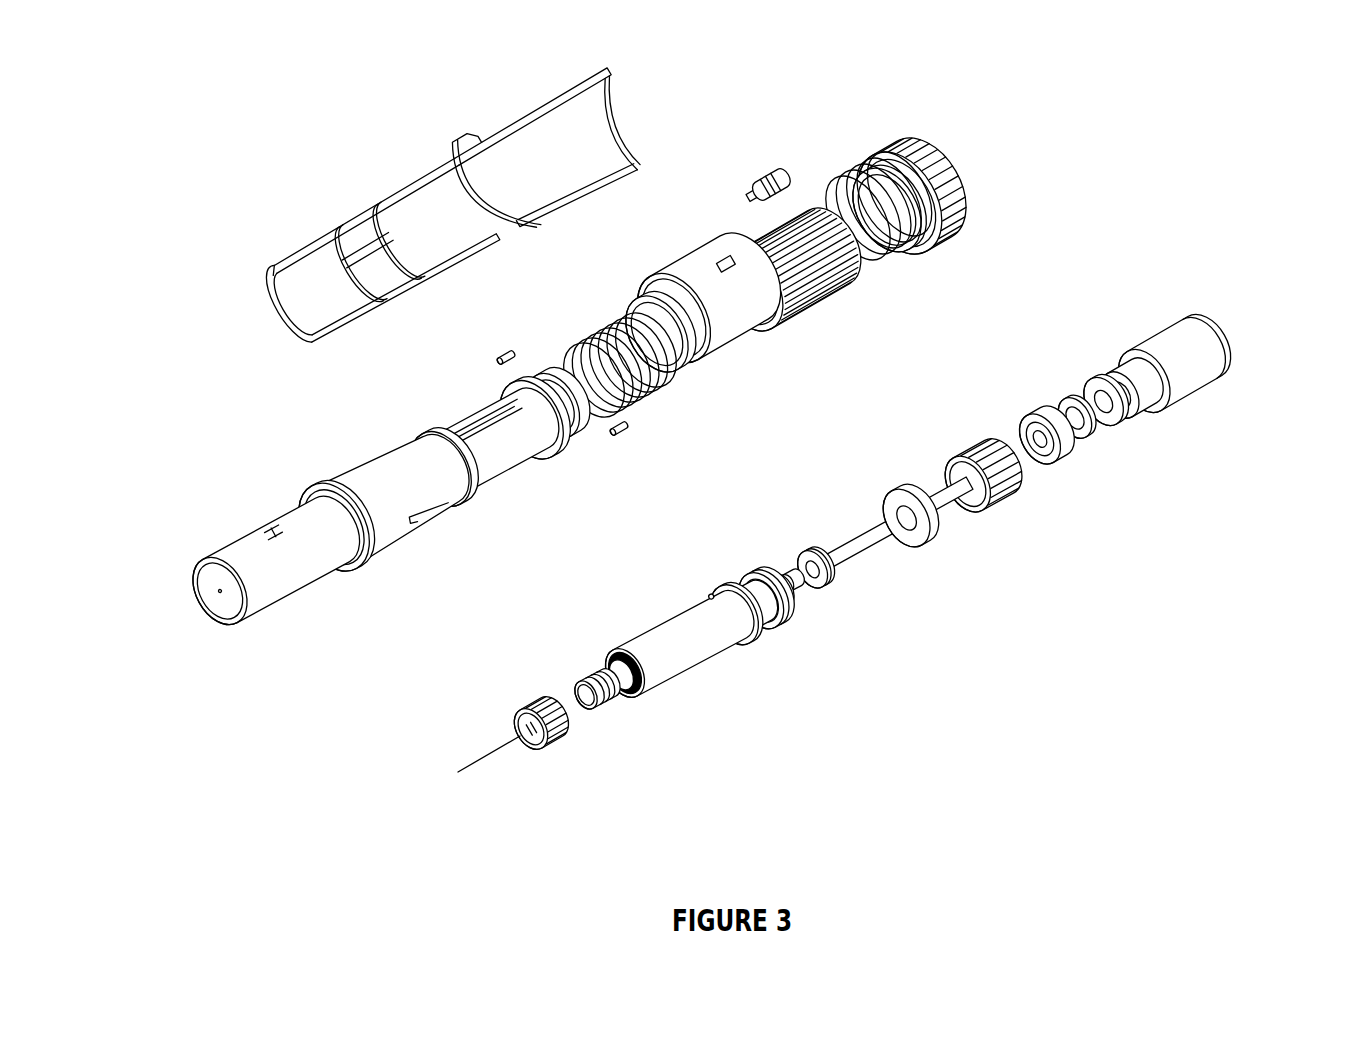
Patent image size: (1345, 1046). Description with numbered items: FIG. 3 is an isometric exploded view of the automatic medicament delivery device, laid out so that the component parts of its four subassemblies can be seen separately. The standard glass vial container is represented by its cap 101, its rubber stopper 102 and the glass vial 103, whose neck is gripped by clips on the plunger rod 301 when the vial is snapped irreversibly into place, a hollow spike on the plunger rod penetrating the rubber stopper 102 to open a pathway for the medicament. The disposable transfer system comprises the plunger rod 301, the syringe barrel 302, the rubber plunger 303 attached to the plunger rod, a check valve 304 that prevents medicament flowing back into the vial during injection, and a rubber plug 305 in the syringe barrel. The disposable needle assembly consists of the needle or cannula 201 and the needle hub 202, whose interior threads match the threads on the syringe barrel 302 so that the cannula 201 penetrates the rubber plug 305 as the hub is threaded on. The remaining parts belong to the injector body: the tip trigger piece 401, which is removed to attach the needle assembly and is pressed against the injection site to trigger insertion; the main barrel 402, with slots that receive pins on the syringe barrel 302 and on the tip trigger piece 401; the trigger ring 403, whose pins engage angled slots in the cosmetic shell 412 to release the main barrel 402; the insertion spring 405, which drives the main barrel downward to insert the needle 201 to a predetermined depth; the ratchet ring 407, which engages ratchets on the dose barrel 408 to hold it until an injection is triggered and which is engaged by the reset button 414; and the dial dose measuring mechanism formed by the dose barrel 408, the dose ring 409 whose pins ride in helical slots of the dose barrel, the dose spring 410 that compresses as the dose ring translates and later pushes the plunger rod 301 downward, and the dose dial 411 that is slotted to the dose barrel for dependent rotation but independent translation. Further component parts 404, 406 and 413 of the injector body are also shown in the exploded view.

The cap 101 is at (1062, 448).
The rubber stopper 102 is at (1088, 429).
The glass vial 103 is at (1177, 367).
The needle 201 is at (478, 761).
The needle hub 202 is at (547, 742).
The plunger rod 301 is at (937, 522).
The syringe barrel 302 is at (675, 663).
The rubber plunger 303 is at (772, 617).
The check valve 304 is at (803, 588).
The rubber plug 305 is at (600, 709).
The tip trigger piece 401 is at (278, 579).
The main barrel 402 is at (371, 508).
The trigger ring 403 is at (591, 423).
The pin 404 is at (633, 433).
The insertion spring 405 is at (658, 395).
The retaining ring 406 is at (678, 375).
The ratchet ring 407 is at (714, 323).
The dose barrel 408 is at (795, 279).
The dose ring 409 is at (866, 232).
The dose spring 410 is at (911, 209).
The dose dial 411 is at (952, 188).
The cosmetic shell 412 is at (437, 226).
The housing shell half 413 is at (570, 153).
The reset button 414 is at (750, 178).